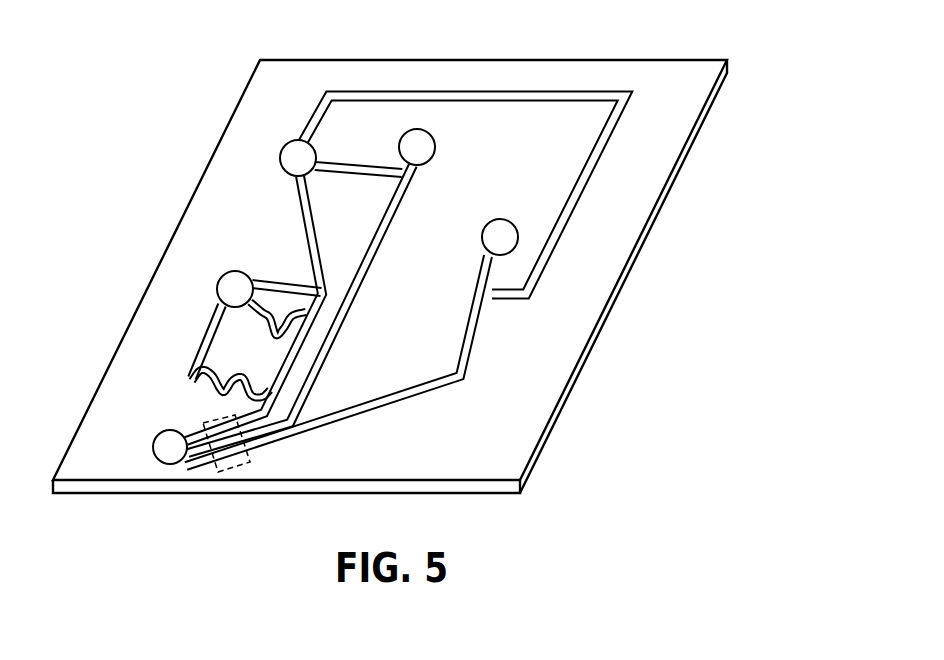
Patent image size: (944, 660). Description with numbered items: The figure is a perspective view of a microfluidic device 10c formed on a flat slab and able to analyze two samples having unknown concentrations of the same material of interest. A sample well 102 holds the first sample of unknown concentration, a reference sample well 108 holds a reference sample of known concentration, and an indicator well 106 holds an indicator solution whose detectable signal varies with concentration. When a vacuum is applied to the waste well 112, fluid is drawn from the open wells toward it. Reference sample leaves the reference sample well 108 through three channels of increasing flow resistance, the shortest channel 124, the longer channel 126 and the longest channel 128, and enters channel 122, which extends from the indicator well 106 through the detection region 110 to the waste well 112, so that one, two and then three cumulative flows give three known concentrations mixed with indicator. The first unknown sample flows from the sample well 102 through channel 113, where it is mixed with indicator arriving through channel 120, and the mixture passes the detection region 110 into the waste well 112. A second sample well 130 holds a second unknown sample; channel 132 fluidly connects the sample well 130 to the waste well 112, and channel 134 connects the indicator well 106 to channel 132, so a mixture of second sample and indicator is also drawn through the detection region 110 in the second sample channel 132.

The microfluidic device 10c is at (563, 46).
The sample well 102 is at (424, 140).
The indicator well 106 is at (305, 158).
The reference sample well 108 is at (232, 290).
The detection region 110 is at (250, 459).
The waste well 112 is at (155, 447).
The channel 113 is at (372, 245).
The channel 120 is at (330, 172).
The channel 122 is at (307, 217).
The channel 124 is at (277, 283).
The channel 126 is at (257, 318).
The channel 128 is at (190, 386).
The sample well 130 is at (507, 237).
The channel 132 is at (441, 390).
The channel 134 is at (556, 238).